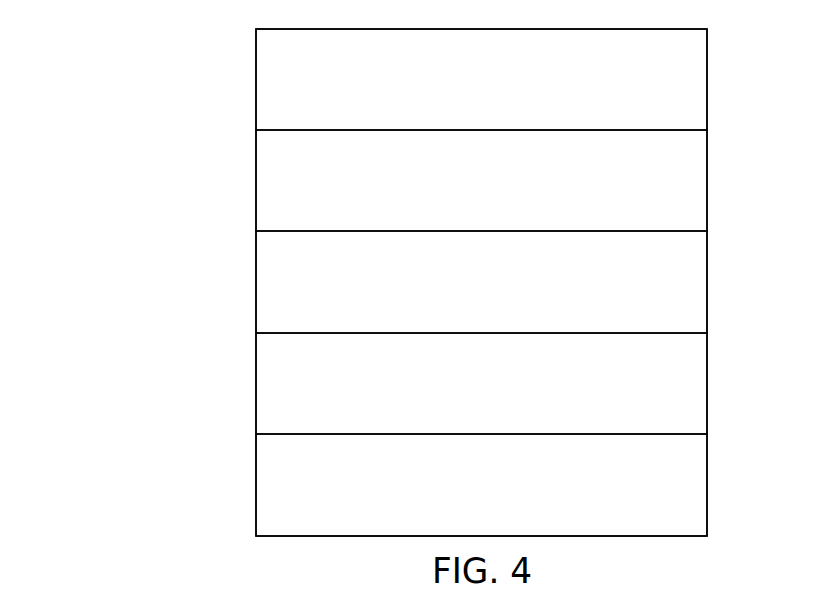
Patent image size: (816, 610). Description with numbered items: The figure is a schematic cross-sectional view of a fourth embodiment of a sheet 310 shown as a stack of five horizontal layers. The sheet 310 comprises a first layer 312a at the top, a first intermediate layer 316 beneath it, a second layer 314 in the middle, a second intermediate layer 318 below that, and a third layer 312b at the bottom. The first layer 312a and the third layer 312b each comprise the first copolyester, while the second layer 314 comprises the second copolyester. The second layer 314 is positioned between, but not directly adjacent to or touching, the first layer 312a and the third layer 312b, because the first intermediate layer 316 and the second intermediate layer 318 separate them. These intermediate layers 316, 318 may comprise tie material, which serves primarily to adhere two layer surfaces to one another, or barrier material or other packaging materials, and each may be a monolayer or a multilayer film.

The sheet 310 is at (208, 80).
The first layer 312a is at (512, 94).
The first intermediate layer 316 is at (504, 197).
The second layer 314 is at (504, 298).
The second intermediate layer 318 is at (504, 399).
The third layer 312b is at (513, 502).